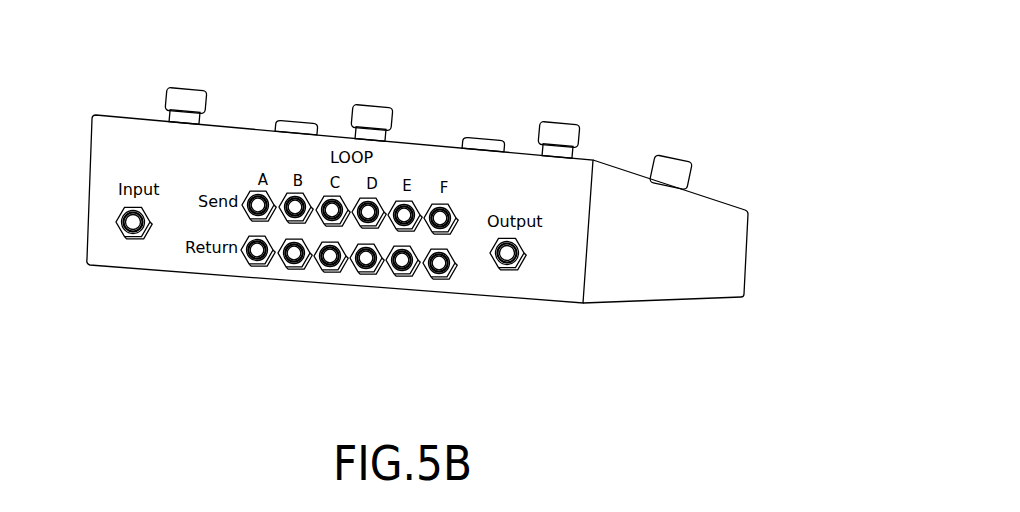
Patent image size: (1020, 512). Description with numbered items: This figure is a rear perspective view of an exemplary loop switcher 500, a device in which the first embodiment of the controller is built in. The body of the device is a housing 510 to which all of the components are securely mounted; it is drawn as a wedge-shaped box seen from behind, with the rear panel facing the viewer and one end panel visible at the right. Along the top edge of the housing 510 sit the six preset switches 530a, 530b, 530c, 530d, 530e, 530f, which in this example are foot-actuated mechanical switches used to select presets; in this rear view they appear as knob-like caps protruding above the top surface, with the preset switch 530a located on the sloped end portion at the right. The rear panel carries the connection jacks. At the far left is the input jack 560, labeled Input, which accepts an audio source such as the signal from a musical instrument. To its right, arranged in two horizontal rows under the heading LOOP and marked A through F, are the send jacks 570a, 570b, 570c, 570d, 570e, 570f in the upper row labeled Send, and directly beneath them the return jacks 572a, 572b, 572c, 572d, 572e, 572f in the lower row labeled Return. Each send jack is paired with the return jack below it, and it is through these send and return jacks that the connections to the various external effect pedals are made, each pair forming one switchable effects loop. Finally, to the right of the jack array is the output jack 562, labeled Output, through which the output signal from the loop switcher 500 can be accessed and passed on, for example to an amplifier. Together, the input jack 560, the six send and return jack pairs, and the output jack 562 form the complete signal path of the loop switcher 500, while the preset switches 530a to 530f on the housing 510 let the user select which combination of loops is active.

The loop switcher 500 is at (0, 0).
The housing 510 is at (630, 302).
The preset switch 530a is at (668, 157).
The preset switch 530b is at (485, 138).
The preset switch 530c is at (295, 122).
The preset switch 530d is at (557, 118).
The preset switch 530e is at (372, 105).
The preset switch 530f is at (168, 88).
The input jack 560 is at (134, 240).
The output jack 562 is at (507, 271).
The send jack 570a is at (247, 191).
The send jack 570b is at (287, 192).
The send jack 570c is at (320, 195).
The send jack 570d is at (385, 198).
The send jack 570e is at (420, 200).
The send jack 570f is at (458, 212).
The return jack 572a is at (257, 266).
The return jack 572b is at (292, 268).
The return jack 572c is at (327, 271).
The return jack 572d is at (360, 273).
The return jack 572e is at (400, 275).
The return jack 572f is at (435, 278).